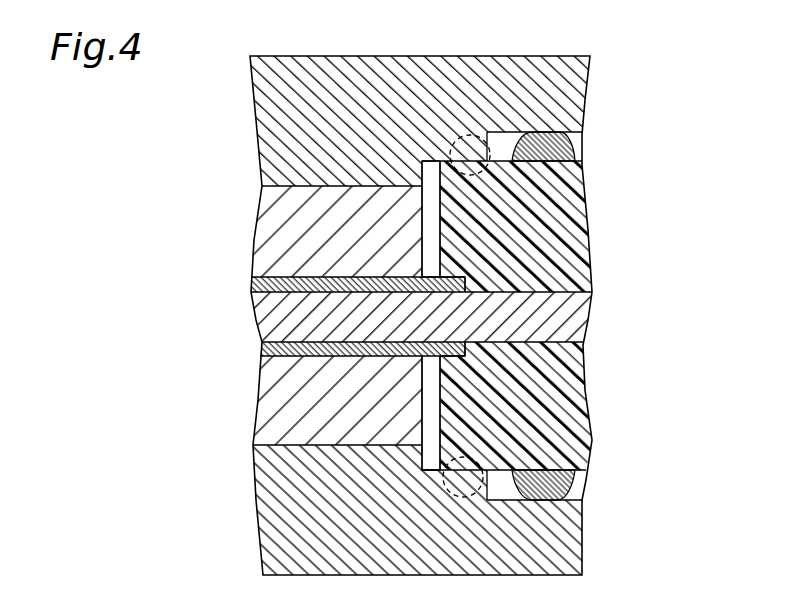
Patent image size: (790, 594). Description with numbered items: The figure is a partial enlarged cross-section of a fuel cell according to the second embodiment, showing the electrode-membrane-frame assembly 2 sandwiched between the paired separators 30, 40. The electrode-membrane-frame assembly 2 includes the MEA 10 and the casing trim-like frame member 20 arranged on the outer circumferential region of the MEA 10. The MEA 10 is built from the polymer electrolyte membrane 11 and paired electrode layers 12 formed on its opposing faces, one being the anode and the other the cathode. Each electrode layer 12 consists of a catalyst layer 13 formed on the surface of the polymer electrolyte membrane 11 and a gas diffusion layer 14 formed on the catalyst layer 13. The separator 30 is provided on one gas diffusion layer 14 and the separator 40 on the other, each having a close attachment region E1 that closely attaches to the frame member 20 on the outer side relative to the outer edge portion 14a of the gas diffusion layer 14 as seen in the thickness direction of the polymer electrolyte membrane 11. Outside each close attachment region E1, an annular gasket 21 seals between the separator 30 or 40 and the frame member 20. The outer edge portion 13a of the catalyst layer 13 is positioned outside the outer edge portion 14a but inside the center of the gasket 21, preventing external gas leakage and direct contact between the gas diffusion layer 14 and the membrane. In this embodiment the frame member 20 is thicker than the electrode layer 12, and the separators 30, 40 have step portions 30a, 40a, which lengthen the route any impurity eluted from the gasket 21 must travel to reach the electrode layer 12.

The electrode-membrane-frame assembly 2 is at (658, 310).
The MEA (membrane electrode assembly) 10 is at (340, 315).
The polymer electrolyte membrane 11 is at (272, 320).
The electrode layer 12 is at (301, 315).
The catalyst layer 13 is at (326, 318).
The outer edge portion of the catalyst layer 13a is at (468, 284).
The gas diffusion layer 14 is at (273, 236).
The outer edge portion of the gas diffusion layer 14a is at (426, 236).
The frame member 20 is at (578, 180).
The gasket 21 is at (556, 147).
The separator 30 is at (575, 74).
The step portion 30a is at (431, 169).
The separator 40 is at (575, 558).
The step portion 40a is at (432, 459).
The close attachment region E1 is at (470, 135).